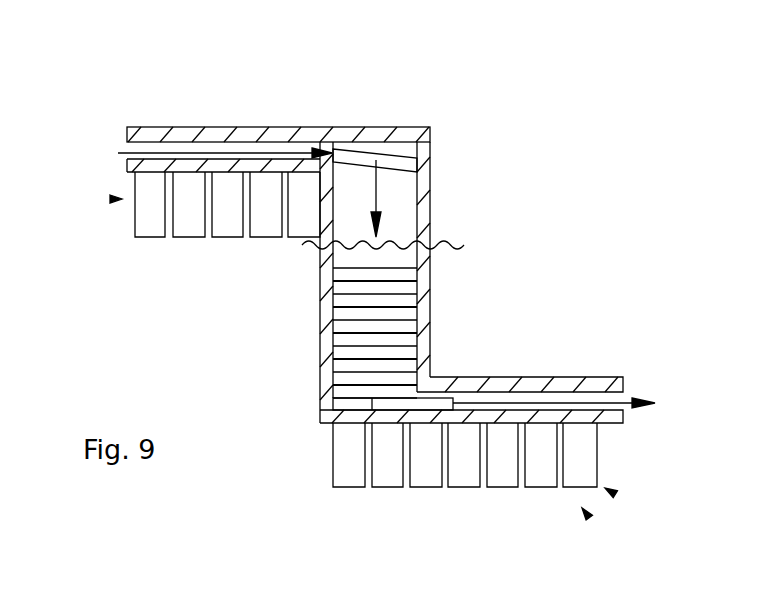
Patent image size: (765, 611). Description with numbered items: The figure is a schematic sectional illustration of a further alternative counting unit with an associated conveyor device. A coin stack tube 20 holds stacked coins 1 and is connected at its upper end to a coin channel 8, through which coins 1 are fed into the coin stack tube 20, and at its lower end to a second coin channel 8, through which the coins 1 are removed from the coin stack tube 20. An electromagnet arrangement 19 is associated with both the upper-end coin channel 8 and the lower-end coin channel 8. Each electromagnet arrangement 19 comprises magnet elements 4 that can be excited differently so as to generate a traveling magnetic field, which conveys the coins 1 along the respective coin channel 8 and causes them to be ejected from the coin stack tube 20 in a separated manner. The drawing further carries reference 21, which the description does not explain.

The coins 1 is at (400, 162).
The magnet elements 4 is at (152, 222).
The coin channel 8 is at (298, 147).
The electromagnet arrangement 19 is at (110, 199).
The coin stack tube 20 is at (343, 255).
The air flow direction 21 is at (589, 518).